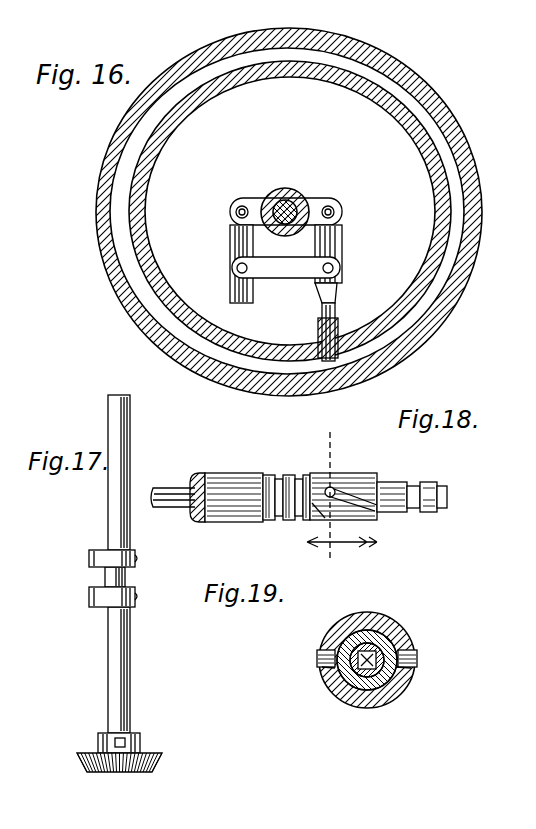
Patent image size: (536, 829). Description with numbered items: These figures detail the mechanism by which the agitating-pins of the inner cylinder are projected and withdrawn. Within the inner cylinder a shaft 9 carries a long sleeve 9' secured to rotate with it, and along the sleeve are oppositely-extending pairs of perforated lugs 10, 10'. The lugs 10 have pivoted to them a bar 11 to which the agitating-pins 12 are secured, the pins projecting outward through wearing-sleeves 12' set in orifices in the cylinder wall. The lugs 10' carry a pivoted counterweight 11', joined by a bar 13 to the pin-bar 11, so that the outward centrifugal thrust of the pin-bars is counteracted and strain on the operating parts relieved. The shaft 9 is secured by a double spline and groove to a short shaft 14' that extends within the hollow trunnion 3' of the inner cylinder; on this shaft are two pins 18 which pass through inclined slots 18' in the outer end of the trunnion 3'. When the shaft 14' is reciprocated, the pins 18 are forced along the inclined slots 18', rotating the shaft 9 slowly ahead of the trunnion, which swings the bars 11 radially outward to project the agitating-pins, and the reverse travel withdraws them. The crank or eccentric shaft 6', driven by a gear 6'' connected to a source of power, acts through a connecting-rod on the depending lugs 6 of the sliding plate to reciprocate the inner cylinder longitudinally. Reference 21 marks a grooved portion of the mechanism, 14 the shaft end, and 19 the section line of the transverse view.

In FIG. 16, the shaft 9 is at (275, 197).
In FIG. 18, the shaft 9 is at (173, 484).
In FIG. 19, the shaft 9 is at (367, 627).
In FIG. 16, the long sleeve 9' is at (290, 200).
In FIG. 16, the perforated lugs 10 is at (303, 211).
In FIG. 16, the perforated lugs 10' is at (224, 212).
In FIG. 16, the bar 11 is at (345, 254).
In FIG. 16, the counterweight 11' is at (226, 264).
In FIG. 16, the agitating-pins 12 is at (345, 322).
In FIG. 16, the wearing-sleeves 12' is at (307, 338).
In FIG. 16, the bar 13 is at (290, 280).
In FIG. 17, the depending lugs 6 is at (97, 578).
In FIG. 17, the crank or eccentric shaft 6' is at (106, 564).
In FIG. 17, the gear 6'' is at (98, 760).
In FIG. 18, the hollow trunnion 3' is at (226, 484).
In FIG. 19, the hollow trunnion 3' is at (367, 676).
In FIG. 18, the grooved portion 21 is at (284, 475).
In FIG. 18, the pins 18 is at (343, 482).
In FIG. 19, the pins 18 is at (375, 665).
In FIG. 18, the inclined slots 18' is at (303, 523).
In FIG. 19, the inclined slots 18' is at (372, 692).
In FIG. 19, the shaft end 14 is at (394, 643).
In FIG. 18, the short shaft 14' is at (412, 483).
In FIG. 19, the short shaft 14' is at (345, 653).
In FIG. 18, the direction arrow 19 is at (342, 503).